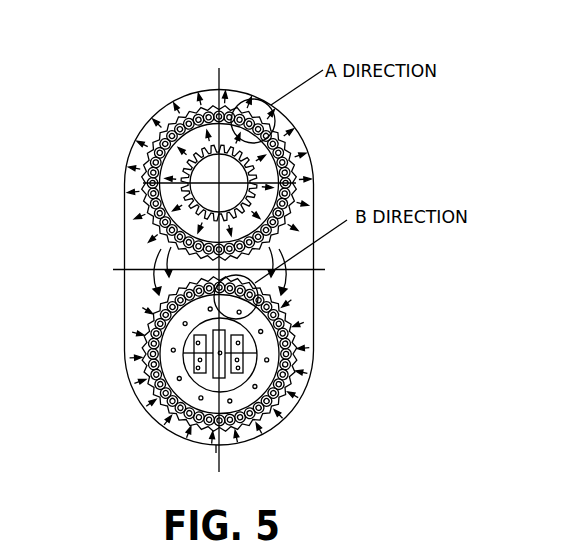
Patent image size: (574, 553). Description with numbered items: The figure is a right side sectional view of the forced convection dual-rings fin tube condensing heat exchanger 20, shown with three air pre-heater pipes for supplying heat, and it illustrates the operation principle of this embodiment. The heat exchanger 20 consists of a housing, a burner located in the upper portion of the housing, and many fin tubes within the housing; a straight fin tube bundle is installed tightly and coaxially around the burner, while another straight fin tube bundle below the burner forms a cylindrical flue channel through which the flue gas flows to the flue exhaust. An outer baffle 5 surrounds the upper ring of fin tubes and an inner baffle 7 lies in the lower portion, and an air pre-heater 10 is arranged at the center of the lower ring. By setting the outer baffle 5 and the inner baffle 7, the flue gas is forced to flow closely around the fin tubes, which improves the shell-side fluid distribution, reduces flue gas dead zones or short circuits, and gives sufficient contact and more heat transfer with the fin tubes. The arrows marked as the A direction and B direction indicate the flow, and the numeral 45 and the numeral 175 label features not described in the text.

The heat exchanger 20 is at (263, 41).
The outer baffle 5 is at (143, 125).
The air flow 45 is at (187, 98).
The inner baffle 7 is at (152, 318).
The roller ring 175 is at (147, 348).
The air pre-heater 10 is at (193, 373).